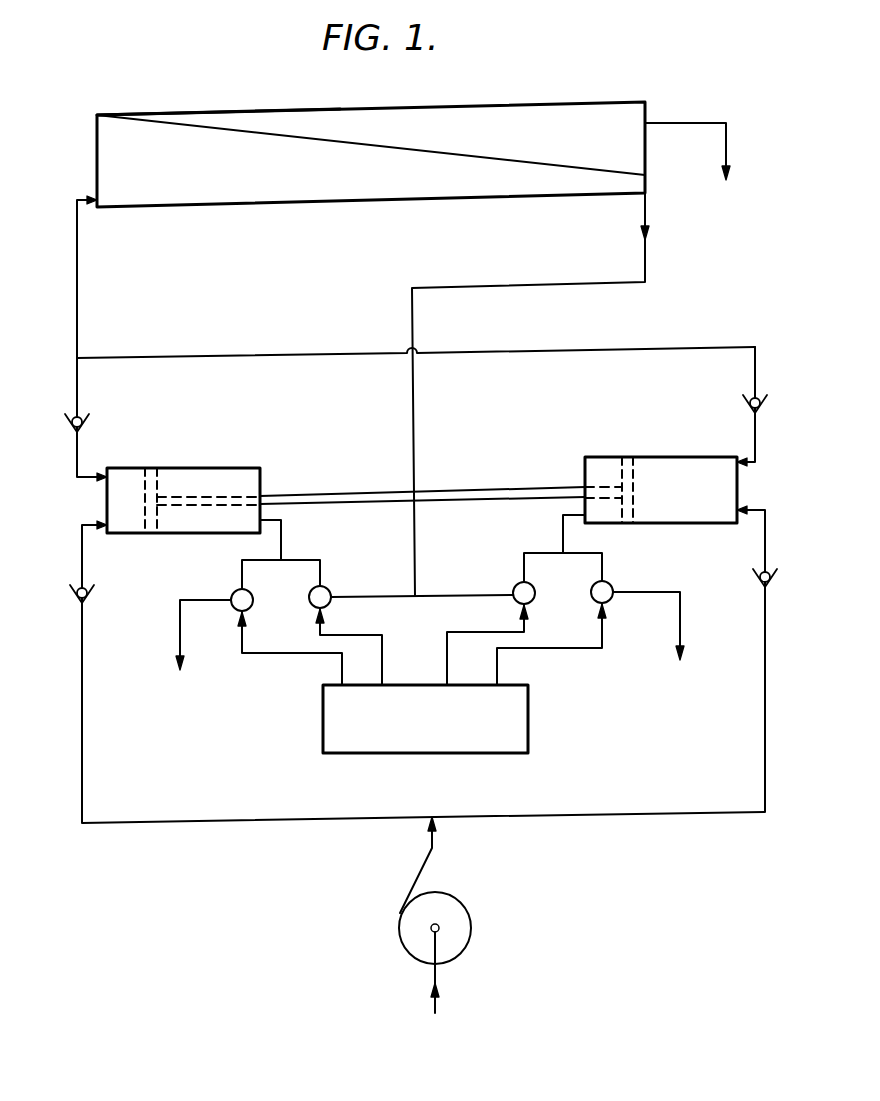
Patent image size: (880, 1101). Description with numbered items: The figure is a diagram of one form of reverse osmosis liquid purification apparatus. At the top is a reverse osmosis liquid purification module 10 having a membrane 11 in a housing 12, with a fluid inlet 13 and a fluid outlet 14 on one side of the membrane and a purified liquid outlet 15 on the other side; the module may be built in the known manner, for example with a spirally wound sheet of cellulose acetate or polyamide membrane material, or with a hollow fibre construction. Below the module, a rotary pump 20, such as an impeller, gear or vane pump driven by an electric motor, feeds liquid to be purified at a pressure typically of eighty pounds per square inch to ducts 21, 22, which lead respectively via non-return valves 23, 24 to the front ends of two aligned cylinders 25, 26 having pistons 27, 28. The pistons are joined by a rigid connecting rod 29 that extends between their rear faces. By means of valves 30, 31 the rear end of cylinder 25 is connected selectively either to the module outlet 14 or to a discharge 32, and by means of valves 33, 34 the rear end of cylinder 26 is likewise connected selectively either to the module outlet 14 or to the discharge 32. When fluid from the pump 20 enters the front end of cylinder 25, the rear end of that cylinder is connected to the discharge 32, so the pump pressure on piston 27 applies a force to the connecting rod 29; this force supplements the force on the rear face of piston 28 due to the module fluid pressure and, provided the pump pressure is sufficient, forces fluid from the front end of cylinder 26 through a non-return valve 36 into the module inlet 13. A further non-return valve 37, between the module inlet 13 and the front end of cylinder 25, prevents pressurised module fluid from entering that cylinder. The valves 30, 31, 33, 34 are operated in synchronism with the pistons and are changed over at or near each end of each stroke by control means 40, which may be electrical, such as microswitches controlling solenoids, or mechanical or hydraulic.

The reverse osmosis liquid purification module 10 is at (500, 94).
The membrane 11 is at (265, 128).
The housing 12 is at (210, 113).
The fluid inlet 13 is at (77, 200).
The fluid outlet 14 is at (648, 256).
The purified liquid outlet 15 is at (683, 123).
The rotary pump 20 is at (407, 938).
The duct 21 is at (212, 822).
The duct 22 is at (662, 812).
The non-return valve 23 is at (92, 597).
The non-return valve 24 is at (755, 578).
The cylinder 25 is at (213, 468).
The cylinder 26 is at (683, 457).
The piston 27 is at (150, 468).
The piston 28 is at (622, 457).
The connecting rod 29 is at (470, 490).
The valve 30 is at (327, 590).
The valve 31 is at (235, 592).
The discharge 32 is at (180, 632).
The valve 33 is at (515, 586).
The valve 34 is at (610, 585).
The non-return valve 36 is at (743, 403).
The non-return valve 37 is at (88, 424).
The control means 40 is at (323, 715).